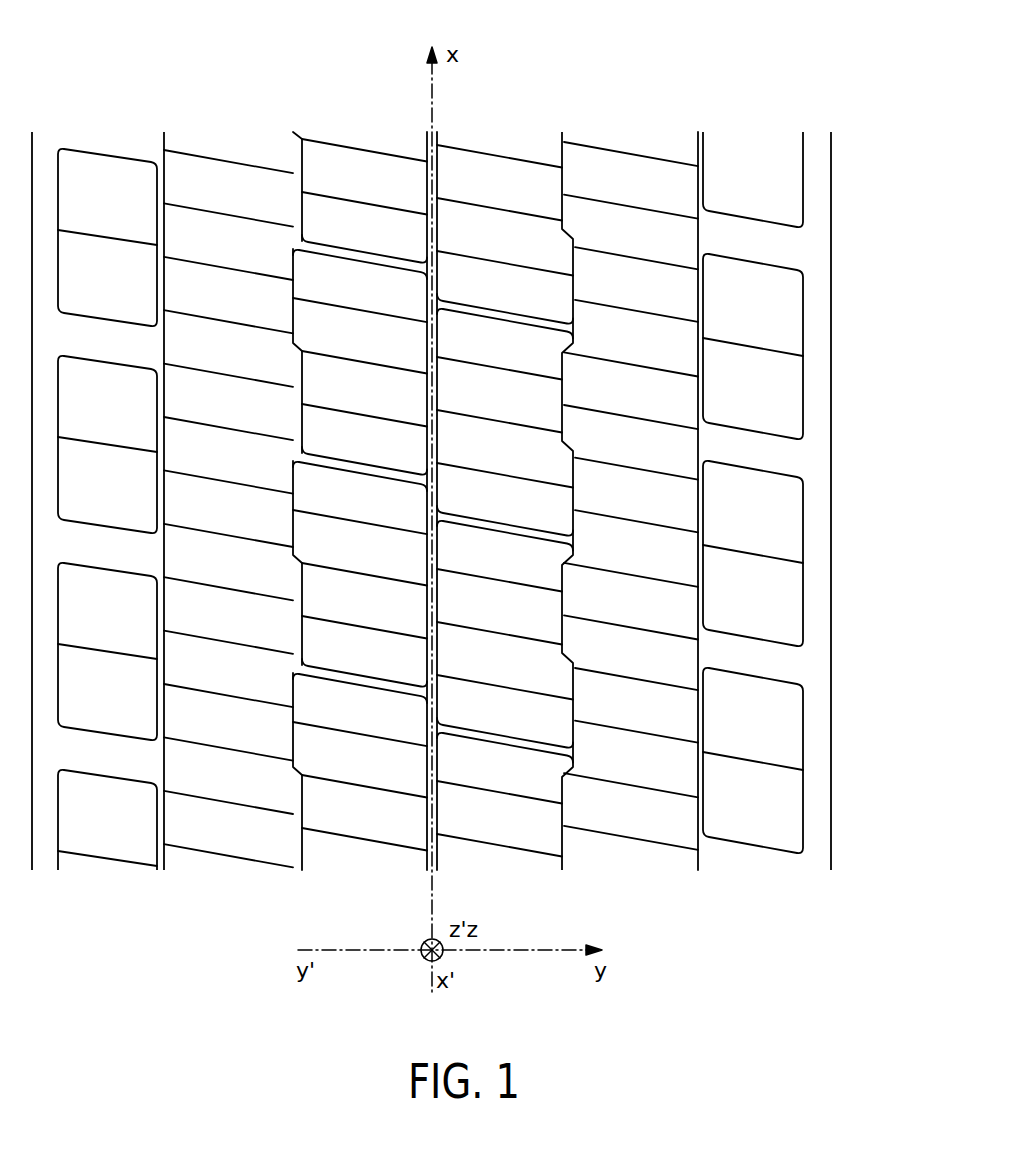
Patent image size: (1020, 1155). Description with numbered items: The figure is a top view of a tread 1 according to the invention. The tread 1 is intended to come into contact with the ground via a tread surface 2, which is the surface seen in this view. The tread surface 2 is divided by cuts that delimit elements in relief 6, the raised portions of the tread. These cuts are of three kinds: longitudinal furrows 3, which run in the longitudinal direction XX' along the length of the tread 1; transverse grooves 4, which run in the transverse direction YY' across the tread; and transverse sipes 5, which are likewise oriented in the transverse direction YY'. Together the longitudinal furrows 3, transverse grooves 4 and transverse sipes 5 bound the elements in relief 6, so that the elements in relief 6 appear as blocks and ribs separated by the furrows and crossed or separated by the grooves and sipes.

The tread 1 is at (103, 128).
The tread surface 2 is at (246, 134).
The longitudinal furrows 3 is at (700, 128).
The transverse grooves 4 is at (522, 324).
The transverse sipes 5 is at (512, 488).
The elements in relief 6 is at (532, 716).